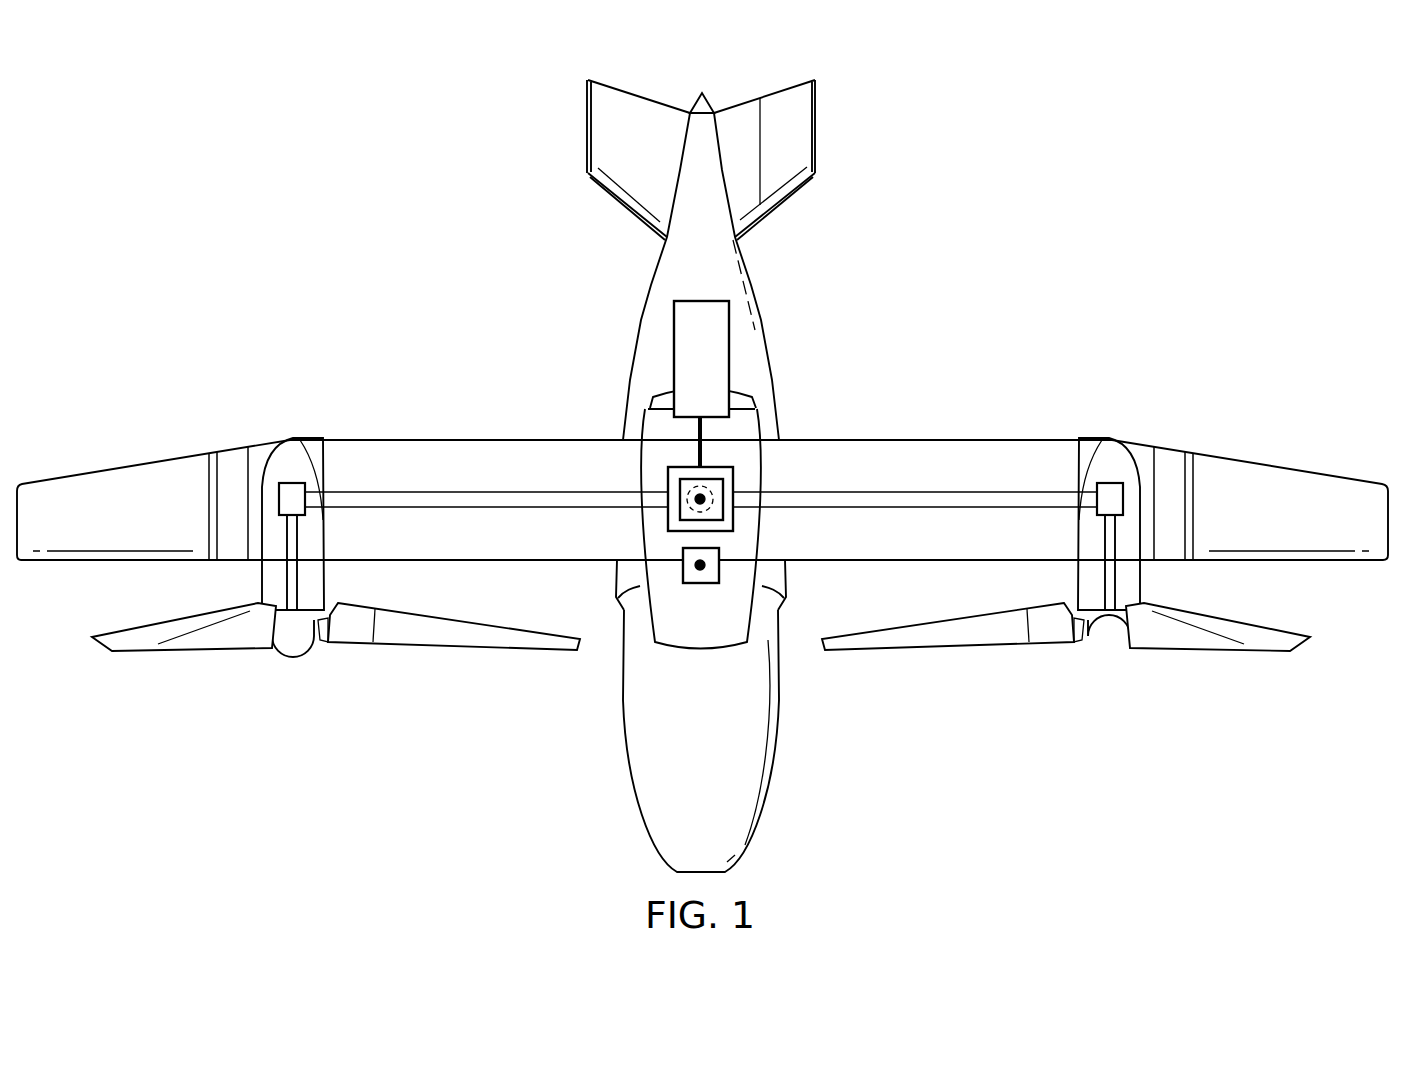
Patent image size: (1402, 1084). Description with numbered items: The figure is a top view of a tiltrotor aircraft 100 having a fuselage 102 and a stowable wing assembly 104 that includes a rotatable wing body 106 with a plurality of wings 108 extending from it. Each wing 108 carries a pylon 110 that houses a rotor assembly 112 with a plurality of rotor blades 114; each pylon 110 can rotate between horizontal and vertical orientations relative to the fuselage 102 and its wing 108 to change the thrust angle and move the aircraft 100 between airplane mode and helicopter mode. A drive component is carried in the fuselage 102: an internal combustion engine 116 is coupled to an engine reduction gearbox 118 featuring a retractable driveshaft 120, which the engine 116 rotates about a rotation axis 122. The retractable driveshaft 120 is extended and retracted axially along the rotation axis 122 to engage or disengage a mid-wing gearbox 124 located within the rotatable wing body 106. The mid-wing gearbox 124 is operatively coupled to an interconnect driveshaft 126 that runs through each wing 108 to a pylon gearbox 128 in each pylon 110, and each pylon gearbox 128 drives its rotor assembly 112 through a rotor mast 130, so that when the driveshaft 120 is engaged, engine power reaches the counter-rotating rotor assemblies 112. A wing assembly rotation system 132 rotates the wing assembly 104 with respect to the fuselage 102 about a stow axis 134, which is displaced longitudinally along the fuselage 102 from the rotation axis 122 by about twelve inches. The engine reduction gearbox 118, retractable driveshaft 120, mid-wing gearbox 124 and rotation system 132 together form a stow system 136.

The aircraft 100 is at (1028, 128).
The fuselage 102 is at (626, 742).
The stowable wing assembly 104 is at (412, 435).
The rotatable wing body 106 is at (658, 574).
The wing 108 is at (533, 440).
The pylon 110 is at (262, 587).
The rotor assembly 112 is at (288, 663).
The rotor blade 114 is at (132, 627).
The internal combustion engine 116 is at (730, 334).
The engine reduction gearbox 118 is at (718, 467).
The retractable driveshaft 120 is at (692, 486).
The rotation axis 122 is at (698, 512).
The mid-wing gearbox 124 is at (723, 513).
The interconnect driveshaft 126 is at (479, 510).
The pylon gearbox 128 is at (293, 483).
The rotor mast 130 is at (306, 592).
The wing assembly rotation system 132 is at (688, 584).
The stow axis 134 is at (700, 568).
The stow system 136 is at (745, 470).